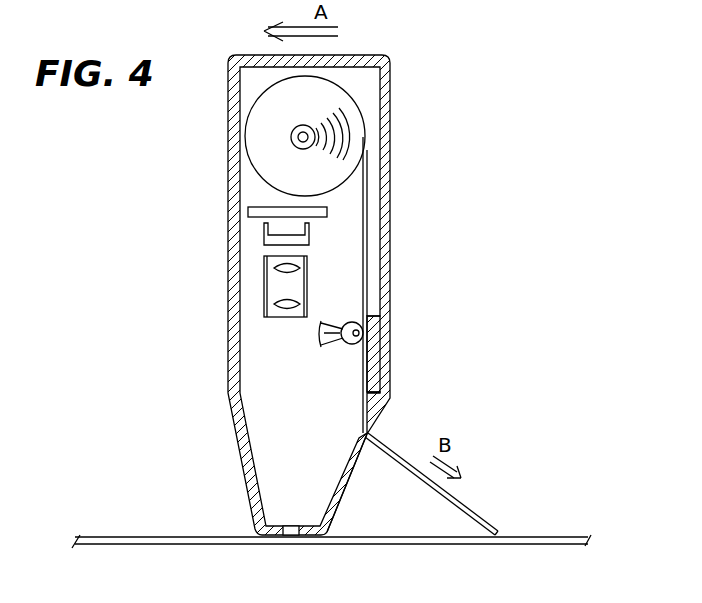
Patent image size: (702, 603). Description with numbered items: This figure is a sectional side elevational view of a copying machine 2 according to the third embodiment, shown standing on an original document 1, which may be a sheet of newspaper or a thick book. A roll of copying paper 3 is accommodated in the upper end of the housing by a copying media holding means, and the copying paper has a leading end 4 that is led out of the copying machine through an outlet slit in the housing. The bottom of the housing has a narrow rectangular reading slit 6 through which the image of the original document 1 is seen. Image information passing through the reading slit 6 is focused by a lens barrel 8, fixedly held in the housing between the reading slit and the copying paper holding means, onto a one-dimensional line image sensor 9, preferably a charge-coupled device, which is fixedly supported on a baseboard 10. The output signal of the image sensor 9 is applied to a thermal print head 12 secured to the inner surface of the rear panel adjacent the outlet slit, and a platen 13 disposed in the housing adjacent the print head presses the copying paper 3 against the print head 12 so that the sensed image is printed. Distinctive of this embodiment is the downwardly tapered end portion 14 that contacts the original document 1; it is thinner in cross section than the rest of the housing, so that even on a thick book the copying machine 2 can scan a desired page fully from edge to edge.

The original document 1 is at (215, 538).
The copying machine 2 is at (381, 228).
The roll of copying media 3 is at (340, 145).
The leading end 4 is at (472, 512).
The reading slit 6 is at (289, 535).
The lens barrel 8 is at (273, 282).
The one-dimensional line image sensor 9 is at (275, 238).
The baseboard 10 is at (277, 208).
The print head 12 is at (372, 372).
The platen 13 is at (359, 327).
The downwardly tapered end portion 14 is at (343, 505).